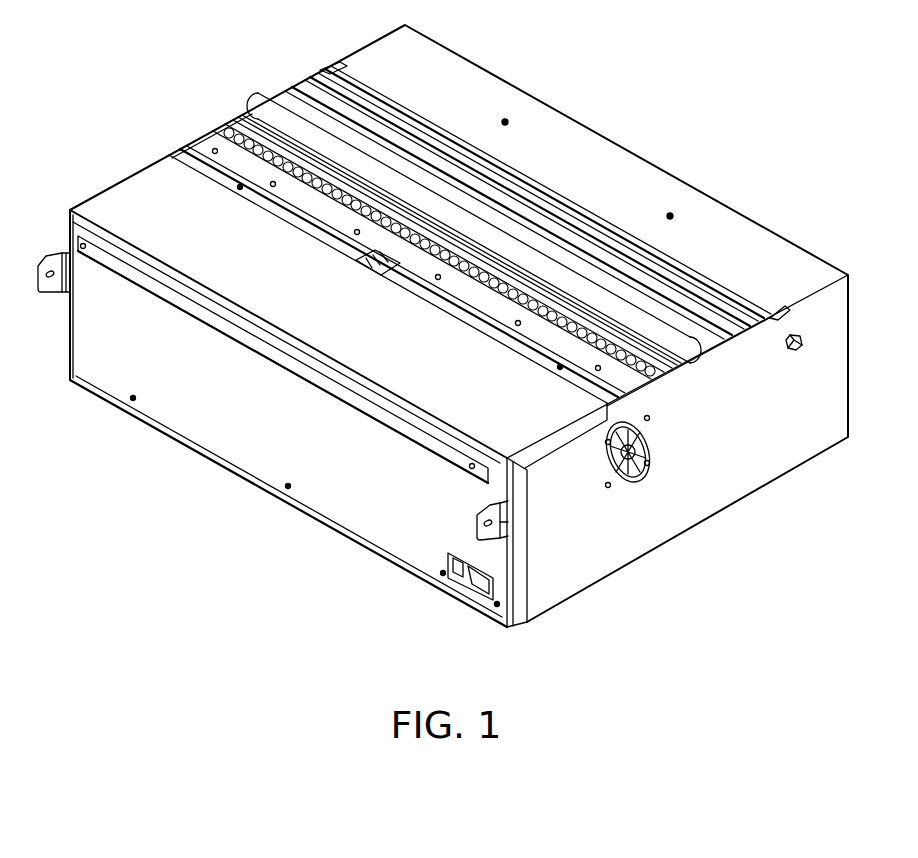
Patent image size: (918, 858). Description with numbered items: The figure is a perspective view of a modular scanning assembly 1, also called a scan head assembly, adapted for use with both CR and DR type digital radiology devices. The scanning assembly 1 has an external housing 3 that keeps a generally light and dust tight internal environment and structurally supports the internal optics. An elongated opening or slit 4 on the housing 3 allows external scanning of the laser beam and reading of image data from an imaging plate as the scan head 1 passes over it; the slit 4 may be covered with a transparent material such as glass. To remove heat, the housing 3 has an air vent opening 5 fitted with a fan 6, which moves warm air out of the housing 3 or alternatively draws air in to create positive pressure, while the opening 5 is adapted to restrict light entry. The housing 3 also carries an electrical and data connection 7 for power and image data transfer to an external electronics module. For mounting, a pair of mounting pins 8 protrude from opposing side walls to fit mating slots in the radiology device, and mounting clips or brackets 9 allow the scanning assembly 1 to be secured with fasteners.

The modular scanning assembly 1 is at (674, 86).
The external housing 3 is at (150, 180).
The elongated opening or slit 4 is at (305, 93).
The opening 5 is at (630, 478).
The fan 6 is at (640, 449).
The electrical and data connection 7 is at (463, 580).
The mounting pins 8 is at (793, 353).
The mounting clips or brackets 9 is at (50, 258).